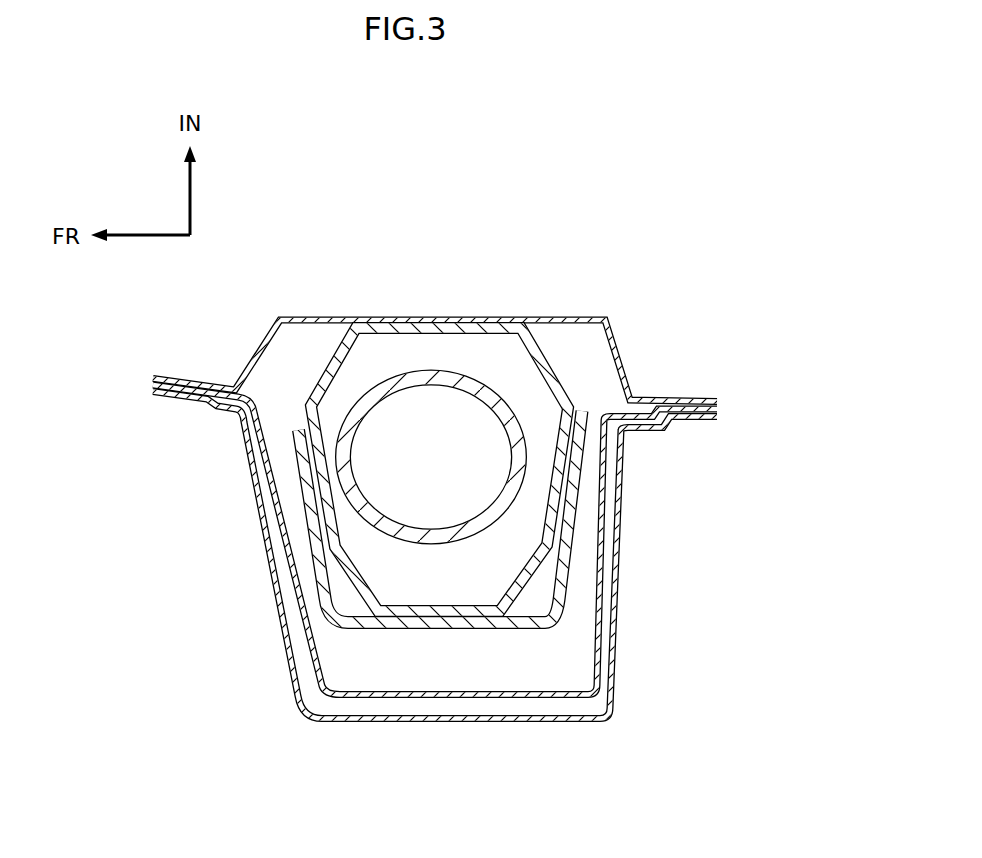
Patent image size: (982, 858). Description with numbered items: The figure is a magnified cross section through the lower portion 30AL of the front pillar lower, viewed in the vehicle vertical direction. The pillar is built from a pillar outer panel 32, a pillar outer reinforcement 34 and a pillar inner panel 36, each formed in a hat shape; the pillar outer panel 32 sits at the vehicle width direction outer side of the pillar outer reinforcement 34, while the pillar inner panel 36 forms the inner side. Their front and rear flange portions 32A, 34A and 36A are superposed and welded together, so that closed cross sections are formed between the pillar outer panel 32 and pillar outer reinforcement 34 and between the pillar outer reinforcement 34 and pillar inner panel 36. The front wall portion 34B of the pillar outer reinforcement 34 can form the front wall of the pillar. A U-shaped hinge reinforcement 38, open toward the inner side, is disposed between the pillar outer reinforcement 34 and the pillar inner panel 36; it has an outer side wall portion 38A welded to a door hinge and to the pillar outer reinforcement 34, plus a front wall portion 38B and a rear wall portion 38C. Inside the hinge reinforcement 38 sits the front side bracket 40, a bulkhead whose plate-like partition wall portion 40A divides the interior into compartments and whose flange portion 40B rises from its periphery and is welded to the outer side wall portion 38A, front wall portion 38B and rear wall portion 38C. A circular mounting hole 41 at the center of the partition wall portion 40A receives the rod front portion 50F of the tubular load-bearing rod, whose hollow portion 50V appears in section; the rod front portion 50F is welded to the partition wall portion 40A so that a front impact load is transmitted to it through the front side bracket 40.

The lower portion of the front pillar lower 30AL is at (735, 270).
The pillar outer panel 32 is at (549, 723).
The flange portion of the pillar outer panel 32A is at (183, 397).
The pillar outer reinforcement 34 is at (470, 699).
The flange portion of the pillar outer reinforcement 34A is at (152, 386).
The front wall portion of the pillar outer reinforcement 34B is at (285, 548).
The pillar inner panel 36 is at (572, 318).
The flange portion of the pillar inner panel 36A is at (205, 382).
The hinge reinforcement 38 is at (567, 570).
The outer side wall portion 38A is at (505, 631).
The front wall portion 38B is at (305, 503).
The rear wall portion 38C is at (568, 520).
The front side bracket 40 is at (560, 370).
The partition wall portion 40A is at (458, 323).
The flange portion 40B is at (418, 617).
The mounting hole 41 is at (414, 532).
The rod front portion 50F is at (408, 385).
The hollow portion 50V is at (474, 410).